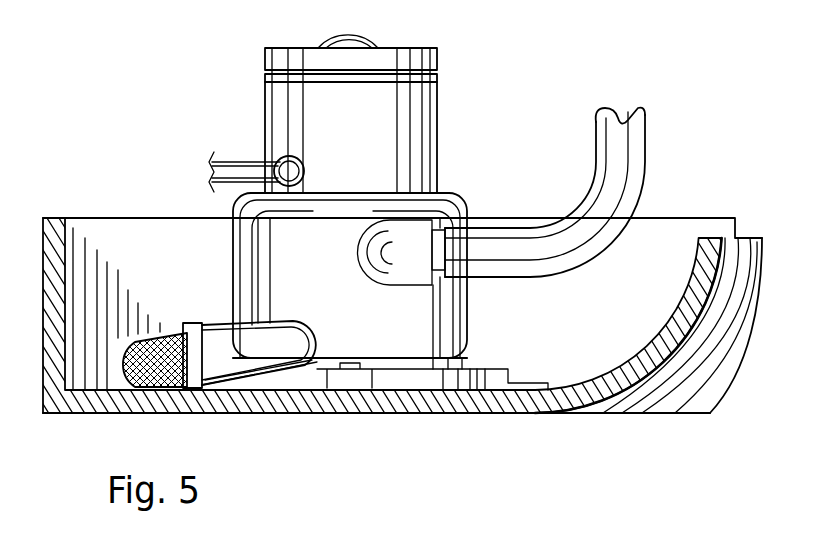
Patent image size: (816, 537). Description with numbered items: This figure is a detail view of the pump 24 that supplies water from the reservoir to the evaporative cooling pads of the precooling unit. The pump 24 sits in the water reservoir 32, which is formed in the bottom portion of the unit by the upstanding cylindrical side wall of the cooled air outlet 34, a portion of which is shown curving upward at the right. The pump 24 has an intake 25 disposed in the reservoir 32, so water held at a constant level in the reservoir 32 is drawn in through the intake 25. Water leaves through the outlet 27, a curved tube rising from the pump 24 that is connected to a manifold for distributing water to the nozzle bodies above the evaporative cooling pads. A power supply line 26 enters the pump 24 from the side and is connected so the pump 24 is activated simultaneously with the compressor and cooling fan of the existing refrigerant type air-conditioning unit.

The pump 24 is at (372, 117).
The intake 25 is at (167, 332).
The power supply line 26 is at (240, 168).
The outlet 27 is at (600, 170).
The water reservoir 32 is at (158, 245).
The cooled air outlet 34 is at (702, 273).